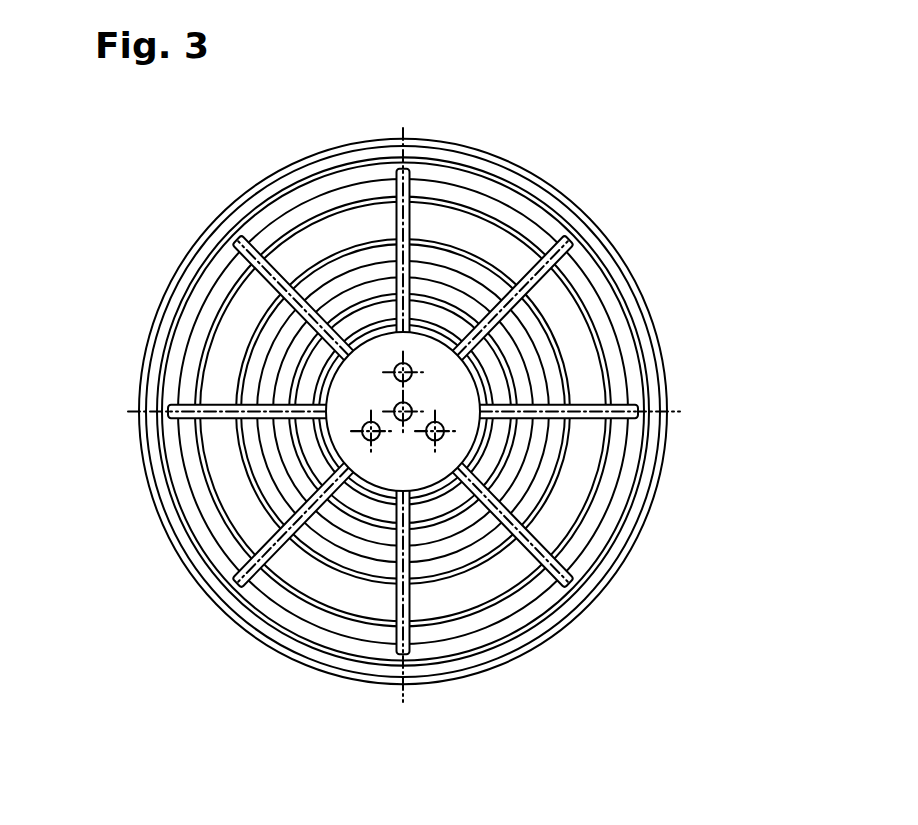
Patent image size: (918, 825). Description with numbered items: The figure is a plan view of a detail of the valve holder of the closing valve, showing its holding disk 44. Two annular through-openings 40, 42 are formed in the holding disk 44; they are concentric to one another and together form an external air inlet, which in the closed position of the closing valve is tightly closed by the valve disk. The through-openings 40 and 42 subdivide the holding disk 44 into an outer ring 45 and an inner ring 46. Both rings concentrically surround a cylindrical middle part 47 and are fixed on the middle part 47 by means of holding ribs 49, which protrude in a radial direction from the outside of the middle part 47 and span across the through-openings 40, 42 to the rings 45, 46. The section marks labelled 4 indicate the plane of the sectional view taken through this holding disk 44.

The annular through-opening 40 is at (490, 363).
The annular through-opening 42 is at (593, 367).
The holding disk 44 is at (513, 159).
The outer ring 45 is at (556, 203).
The inner ring 46 is at (433, 255).
The cylindrical middle part 47 is at (372, 320).
The holding ribs 49 is at (408, 178).
The section line IV-IV 4 is at (78, 382).